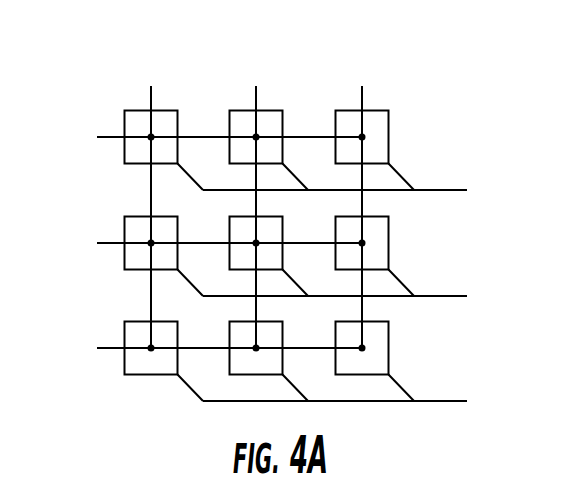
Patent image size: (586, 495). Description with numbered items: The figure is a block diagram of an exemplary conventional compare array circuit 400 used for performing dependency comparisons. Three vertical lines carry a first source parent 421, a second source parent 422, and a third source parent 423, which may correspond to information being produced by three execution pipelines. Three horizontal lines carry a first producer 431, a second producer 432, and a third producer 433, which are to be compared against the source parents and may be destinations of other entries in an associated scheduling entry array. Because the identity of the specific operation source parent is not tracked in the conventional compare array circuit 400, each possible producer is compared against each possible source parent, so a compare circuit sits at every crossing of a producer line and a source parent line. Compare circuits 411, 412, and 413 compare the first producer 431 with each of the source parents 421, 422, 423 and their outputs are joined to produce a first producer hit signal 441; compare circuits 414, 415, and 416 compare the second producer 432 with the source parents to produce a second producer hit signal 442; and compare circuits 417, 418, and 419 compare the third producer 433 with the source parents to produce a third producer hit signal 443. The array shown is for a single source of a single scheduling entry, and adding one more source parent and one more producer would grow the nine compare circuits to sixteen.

The conventional compare array circuit 400 is at (448, 46).
The compare circuit 411 is at (178, 110).
The compare circuit 412 is at (283, 110).
The compare circuit 413 is at (389, 110).
The compare circuit 414 is at (178, 216).
The compare circuit 415 is at (283, 216).
The compare circuit 416 is at (389, 216).
The compare circuit 417 is at (178, 321).
The compare circuit 418 is at (283, 321).
The compare circuit 419 is at (389, 321).
The first source parent 421 is at (143, 52).
The second source parent 422 is at (249, 52).
The third source parent 423 is at (354, 52).
The first producer 431 is at (72, 120).
The second producer 432 is at (72, 226).
The third producer 433 is at (72, 330).
The first producer hit signal 441 is at (488, 152).
The second producer hit signal 442 is at (488, 257).
The third producer hit signal 443 is at (488, 362).